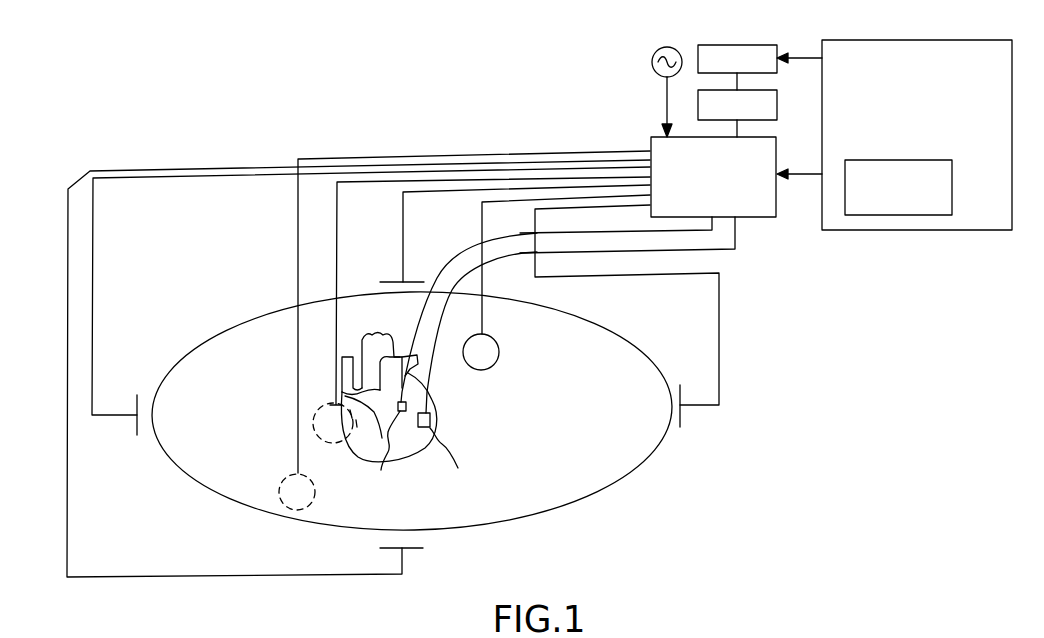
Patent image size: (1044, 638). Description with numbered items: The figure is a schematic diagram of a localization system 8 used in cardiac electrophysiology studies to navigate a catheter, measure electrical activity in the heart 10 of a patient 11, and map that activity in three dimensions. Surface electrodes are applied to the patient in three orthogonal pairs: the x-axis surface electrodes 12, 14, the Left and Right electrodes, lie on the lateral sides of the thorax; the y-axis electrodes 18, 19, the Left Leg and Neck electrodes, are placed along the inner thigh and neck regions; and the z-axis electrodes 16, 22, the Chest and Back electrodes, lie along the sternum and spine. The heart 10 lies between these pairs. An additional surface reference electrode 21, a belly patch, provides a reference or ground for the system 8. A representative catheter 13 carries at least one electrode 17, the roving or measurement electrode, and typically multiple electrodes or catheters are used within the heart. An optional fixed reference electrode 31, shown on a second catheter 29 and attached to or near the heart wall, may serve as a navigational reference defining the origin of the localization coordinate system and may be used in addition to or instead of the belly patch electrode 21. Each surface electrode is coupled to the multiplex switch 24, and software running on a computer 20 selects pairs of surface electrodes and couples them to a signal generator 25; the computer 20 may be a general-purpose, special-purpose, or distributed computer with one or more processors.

The localization system 8 is at (138, 105).
The heart 10 is at (477, 372).
The patient 11 is at (603, 323).
The x-axis surface electrode 12 is at (394, 280).
The catheter 13 is at (737, 240).
The x-axis surface electrode 14 is at (404, 553).
The z-axis surface electrode 16 is at (484, 313).
The catheter electrode 17 is at (431, 420).
The y-axis surface electrode 18 is at (136, 428).
The y-axis surface electrode 19 is at (683, 416).
The computer 20 is at (976, 217).
The surface reference electrode 21 is at (297, 424).
The z-axis surface electrode 22 is at (337, 225).
The multiplex switch 24 is at (713, 177).
The signal generator 25 is at (654, 52).
The second catheter 29 is at (537, 355).
The fixed reference electrode 31 is at (385, 447).